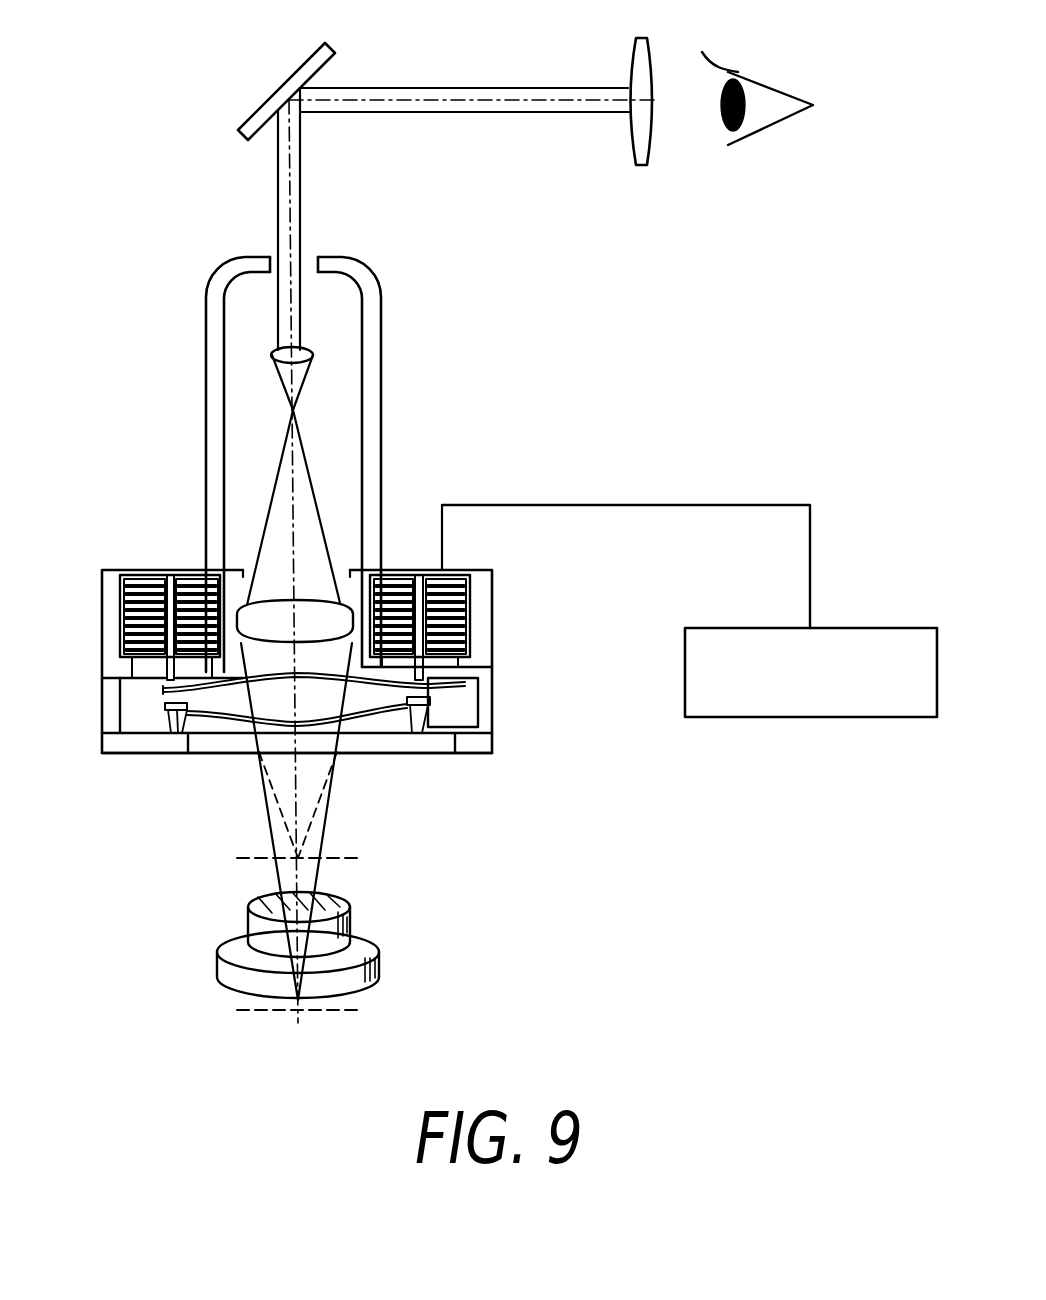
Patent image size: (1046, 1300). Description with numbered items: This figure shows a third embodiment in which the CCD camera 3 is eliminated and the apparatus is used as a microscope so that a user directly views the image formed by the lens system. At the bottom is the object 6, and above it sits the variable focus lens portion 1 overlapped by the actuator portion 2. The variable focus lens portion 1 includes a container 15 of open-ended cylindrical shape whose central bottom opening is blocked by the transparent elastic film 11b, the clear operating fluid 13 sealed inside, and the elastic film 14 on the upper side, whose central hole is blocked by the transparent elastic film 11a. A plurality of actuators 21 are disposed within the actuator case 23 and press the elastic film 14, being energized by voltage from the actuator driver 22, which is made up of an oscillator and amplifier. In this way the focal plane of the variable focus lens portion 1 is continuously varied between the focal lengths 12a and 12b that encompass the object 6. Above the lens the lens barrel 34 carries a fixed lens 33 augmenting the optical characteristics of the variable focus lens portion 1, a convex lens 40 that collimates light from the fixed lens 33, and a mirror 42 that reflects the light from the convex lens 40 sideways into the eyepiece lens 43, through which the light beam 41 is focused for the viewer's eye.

The variable focus lens portion 1 is at (522, 717).
The actuator portion 2 is at (540, 575).
The CCD camera 3 is at (392, 448).
The object 6 is at (367, 942).
The transparent elastic film 11a is at (230, 725).
The transparent elastic film 11b is at (377, 730).
The focal length 12a is at (252, 860).
The focal length 12b is at (255, 1012).
The clear operating fluid 13 is at (455, 723).
The elastic film 14 is at (143, 680).
The container 15 is at (492, 686).
The actuator 21 is at (472, 617).
The actuator driver 22 is at (873, 627).
The actuator case 23 is at (100, 585).
The fixed lens 33 is at (275, 603).
The lens barrel 34 is at (384, 318).
The convex lens 40 is at (272, 356).
The light beam 41 is at (290, 173).
The mirror 42 is at (264, 95).
The eyepiece lens 43 is at (628, 62).